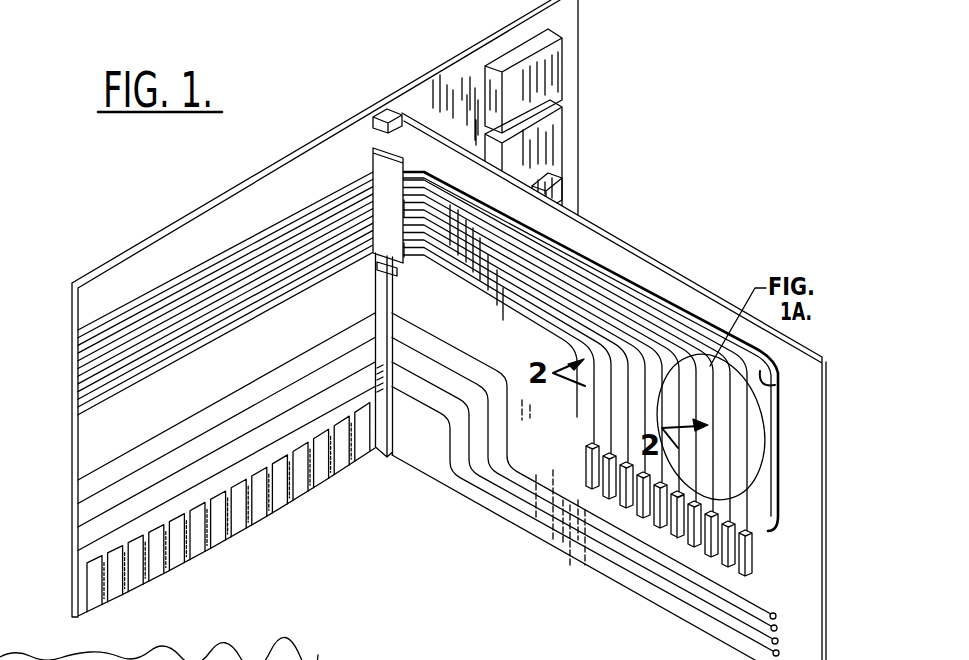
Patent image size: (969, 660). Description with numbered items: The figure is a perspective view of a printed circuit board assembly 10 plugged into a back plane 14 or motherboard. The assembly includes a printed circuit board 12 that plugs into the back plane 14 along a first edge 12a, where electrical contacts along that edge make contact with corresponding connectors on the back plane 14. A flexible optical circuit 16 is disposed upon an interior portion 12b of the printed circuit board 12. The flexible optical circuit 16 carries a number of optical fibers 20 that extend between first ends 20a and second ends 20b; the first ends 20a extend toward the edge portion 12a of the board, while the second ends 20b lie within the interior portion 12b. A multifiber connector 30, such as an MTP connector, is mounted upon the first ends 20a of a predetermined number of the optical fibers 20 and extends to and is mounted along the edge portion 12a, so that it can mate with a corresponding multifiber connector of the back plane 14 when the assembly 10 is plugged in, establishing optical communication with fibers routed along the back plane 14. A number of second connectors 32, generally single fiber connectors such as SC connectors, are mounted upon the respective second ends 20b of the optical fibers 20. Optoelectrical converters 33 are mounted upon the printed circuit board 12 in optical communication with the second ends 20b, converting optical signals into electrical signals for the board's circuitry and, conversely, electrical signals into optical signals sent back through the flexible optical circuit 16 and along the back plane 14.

The printed circuit board assembly 10 is at (681, 272).
The printed circuit board 12 is at (810, 477).
The first edge 12a is at (430, 418).
The interior portion 12b is at (552, 405).
The back plane 14 is at (245, 181).
The flexible optical circuit 16 is at (768, 383).
The optical fibers 20 is at (548, 287).
The first ends 20a is at (261, 309).
The second ends 20b is at (747, 522).
The multifiber connector 30 is at (382, 213).
The second connectors 32 is at (748, 548).
The optoelectrical converters 33 is at (752, 587).